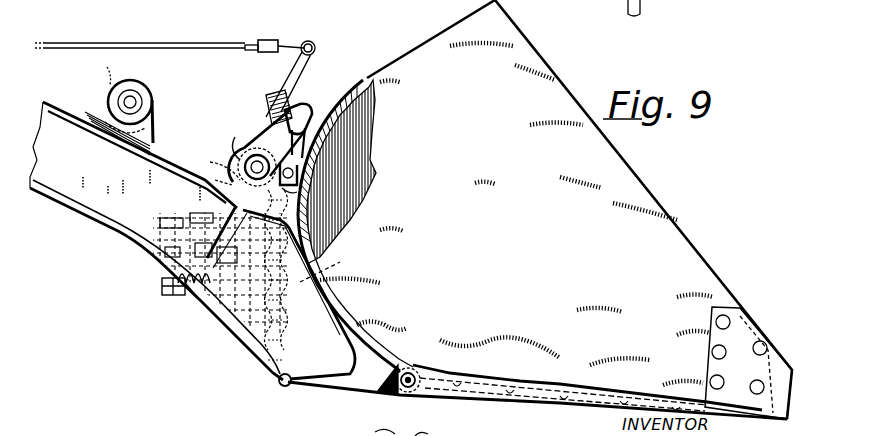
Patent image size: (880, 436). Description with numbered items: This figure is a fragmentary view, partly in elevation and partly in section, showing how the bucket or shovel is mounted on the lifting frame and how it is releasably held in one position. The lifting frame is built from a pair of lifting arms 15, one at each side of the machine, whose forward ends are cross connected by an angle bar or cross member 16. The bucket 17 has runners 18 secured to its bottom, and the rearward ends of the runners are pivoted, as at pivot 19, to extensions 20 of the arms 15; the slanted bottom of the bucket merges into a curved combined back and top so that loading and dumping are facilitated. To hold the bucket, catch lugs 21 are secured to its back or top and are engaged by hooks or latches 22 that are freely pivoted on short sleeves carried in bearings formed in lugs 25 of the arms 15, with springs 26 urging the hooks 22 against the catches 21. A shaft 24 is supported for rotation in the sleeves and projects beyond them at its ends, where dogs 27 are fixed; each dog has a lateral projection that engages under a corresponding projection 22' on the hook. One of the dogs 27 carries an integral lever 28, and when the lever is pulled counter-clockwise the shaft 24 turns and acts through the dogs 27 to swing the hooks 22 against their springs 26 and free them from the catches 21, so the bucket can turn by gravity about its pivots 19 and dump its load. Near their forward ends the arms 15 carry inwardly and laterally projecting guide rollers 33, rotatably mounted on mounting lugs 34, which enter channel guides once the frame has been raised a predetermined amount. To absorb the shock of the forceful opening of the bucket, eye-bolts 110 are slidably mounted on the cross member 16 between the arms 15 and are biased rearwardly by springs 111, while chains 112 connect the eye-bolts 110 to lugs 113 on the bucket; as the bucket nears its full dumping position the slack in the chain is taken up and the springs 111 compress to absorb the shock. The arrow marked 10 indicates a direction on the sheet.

The direction arrow 10 is at (20, 28).
The lifting arm 15 is at (133, 155).
The angle bar or cross member 16 is at (241, 355).
The bucket 17 is at (380, 72).
The runner 18 is at (478, 391).
The pivot 19 is at (410, 378).
The extension 20 is at (307, 407).
The catch lug 21 is at (318, 142).
The hook or latch 22 is at (309, 132).
The projection 22' is at (281, 88).
The shaft 24 is at (240, 156).
The lug 25 is at (232, 158).
The spring 26 is at (188, 188).
The dog 27 is at (310, 157).
The lever 28 is at (318, 32).
The roller 33 is at (155, 100).
The mounting lug 34 is at (105, 97).
The eye-bolt 110 is at (240, 276).
The spring 111 is at (193, 307).
The chain 112 is at (336, 268).
The lug 113 is at (303, 177).